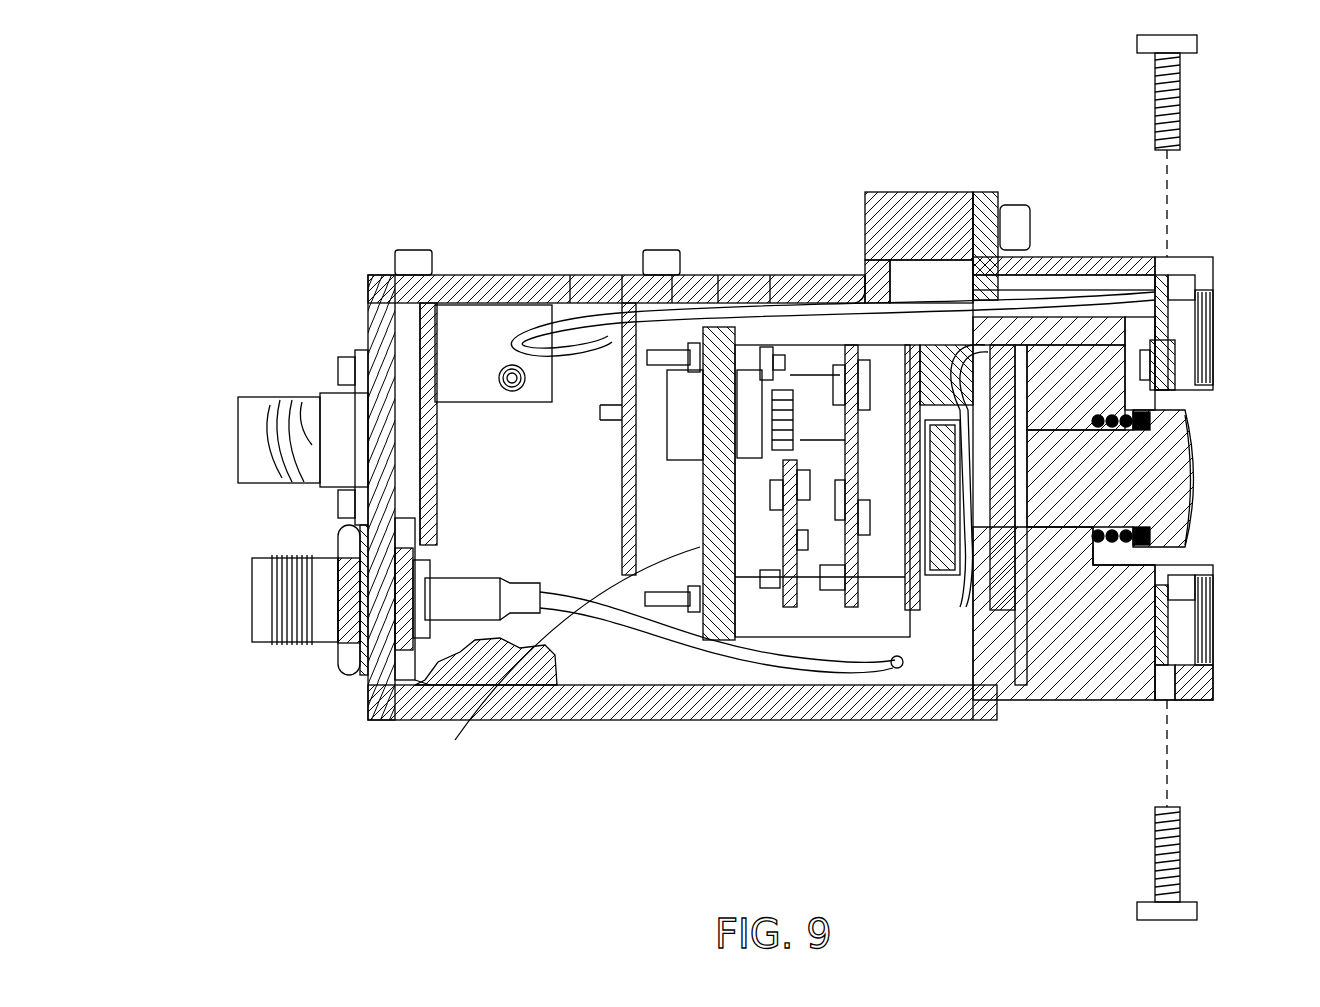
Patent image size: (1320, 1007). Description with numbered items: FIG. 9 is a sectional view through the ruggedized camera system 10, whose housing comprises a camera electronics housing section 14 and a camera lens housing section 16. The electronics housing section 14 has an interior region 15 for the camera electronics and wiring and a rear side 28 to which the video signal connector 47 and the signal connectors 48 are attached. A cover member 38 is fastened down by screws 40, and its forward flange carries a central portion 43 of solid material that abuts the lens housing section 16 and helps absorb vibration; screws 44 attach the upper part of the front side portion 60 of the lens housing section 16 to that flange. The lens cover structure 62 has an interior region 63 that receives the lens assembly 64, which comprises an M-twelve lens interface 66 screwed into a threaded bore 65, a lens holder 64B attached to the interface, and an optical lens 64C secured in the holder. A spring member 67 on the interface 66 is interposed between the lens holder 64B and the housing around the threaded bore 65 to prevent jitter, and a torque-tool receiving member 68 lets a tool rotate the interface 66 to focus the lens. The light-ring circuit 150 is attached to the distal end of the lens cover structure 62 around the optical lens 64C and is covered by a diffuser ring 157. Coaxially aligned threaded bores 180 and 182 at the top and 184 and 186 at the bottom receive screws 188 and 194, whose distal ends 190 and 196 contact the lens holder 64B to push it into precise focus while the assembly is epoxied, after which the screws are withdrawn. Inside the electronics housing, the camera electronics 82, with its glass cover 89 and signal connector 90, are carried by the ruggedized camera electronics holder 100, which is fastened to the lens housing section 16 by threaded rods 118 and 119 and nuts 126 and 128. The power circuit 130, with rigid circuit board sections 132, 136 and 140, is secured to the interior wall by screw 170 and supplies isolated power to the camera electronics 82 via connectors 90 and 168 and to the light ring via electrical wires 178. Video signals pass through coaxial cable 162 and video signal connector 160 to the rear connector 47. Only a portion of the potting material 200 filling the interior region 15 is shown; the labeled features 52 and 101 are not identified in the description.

The ruggedized camera system 10 is at (715, 70).
The camera electronics housing section 14 is at (560, 280).
The interior region 15 is at (592, 690).
The camera lens housing section 16 is at (1100, 257).
The rear side 28 is at (372, 695).
The cover member 38 is at (842, 300).
The screws 40 is at (412, 248).
The central portion 43 is at (900, 190).
The screws 44 is at (1015, 205).
The video signal connector 47 is at (258, 632).
The signal connectors 48 is at (238, 450).
The nuts 52 is at (338, 370).
The front side portion 60 is at (985, 192).
The lens cover structure 62 is at (1125, 258).
The interior region 63 is at (1205, 428).
The lens assembly 64 is at (1200, 505).
The lens holder 64B is at (1150, 416).
The optical lens 64C is at (1198, 455).
The threaded bore 65 is at (1048, 560).
The M12 lens interface 66 is at (1150, 415).
The spring member 67 is at (1090, 550).
The torque-tool receiving member 68 is at (1150, 553).
The camera electronics 82 is at (870, 607).
The glass cover 89 is at (1000, 615).
The signal connector 90 is at (775, 375).
The ruggedized camera electronics holder 100 is at (770, 618).
The arc 101 is at (577, 656).
The threaded rod 118 is at (695, 348).
The threaded rod 119 is at (668, 610).
The nut 126 is at (738, 358).
The nut 128 is at (720, 602).
The power circuit 130 is at (437, 522).
The rigid circuit board section 132 is at (475, 320).
The rigid circuit board section 136 is at (437, 462).
The rigid circuit board section 140 is at (622, 510).
The light-ring circuit 150 is at (1205, 630).
The diffuser ring 157 is at (1210, 312).
The video signal connector 160 is at (470, 578).
The coaxial cable 162 is at (620, 642).
The connector 168 is at (680, 460).
The screw 170 is at (514, 393).
The electrical wires 178 is at (598, 330).
The threaded bore 180 is at (1175, 275).
The threaded bore 182 is at (1187, 372).
The threaded bore 184 is at (1195, 695).
The threaded bore 186 is at (1188, 582).
The screw 188 is at (1182, 80).
The distal end 190 is at (1170, 152).
The screw 194 is at (1182, 860).
The distal end 196 is at (1165, 802).
The potting material 200 is at (490, 692).